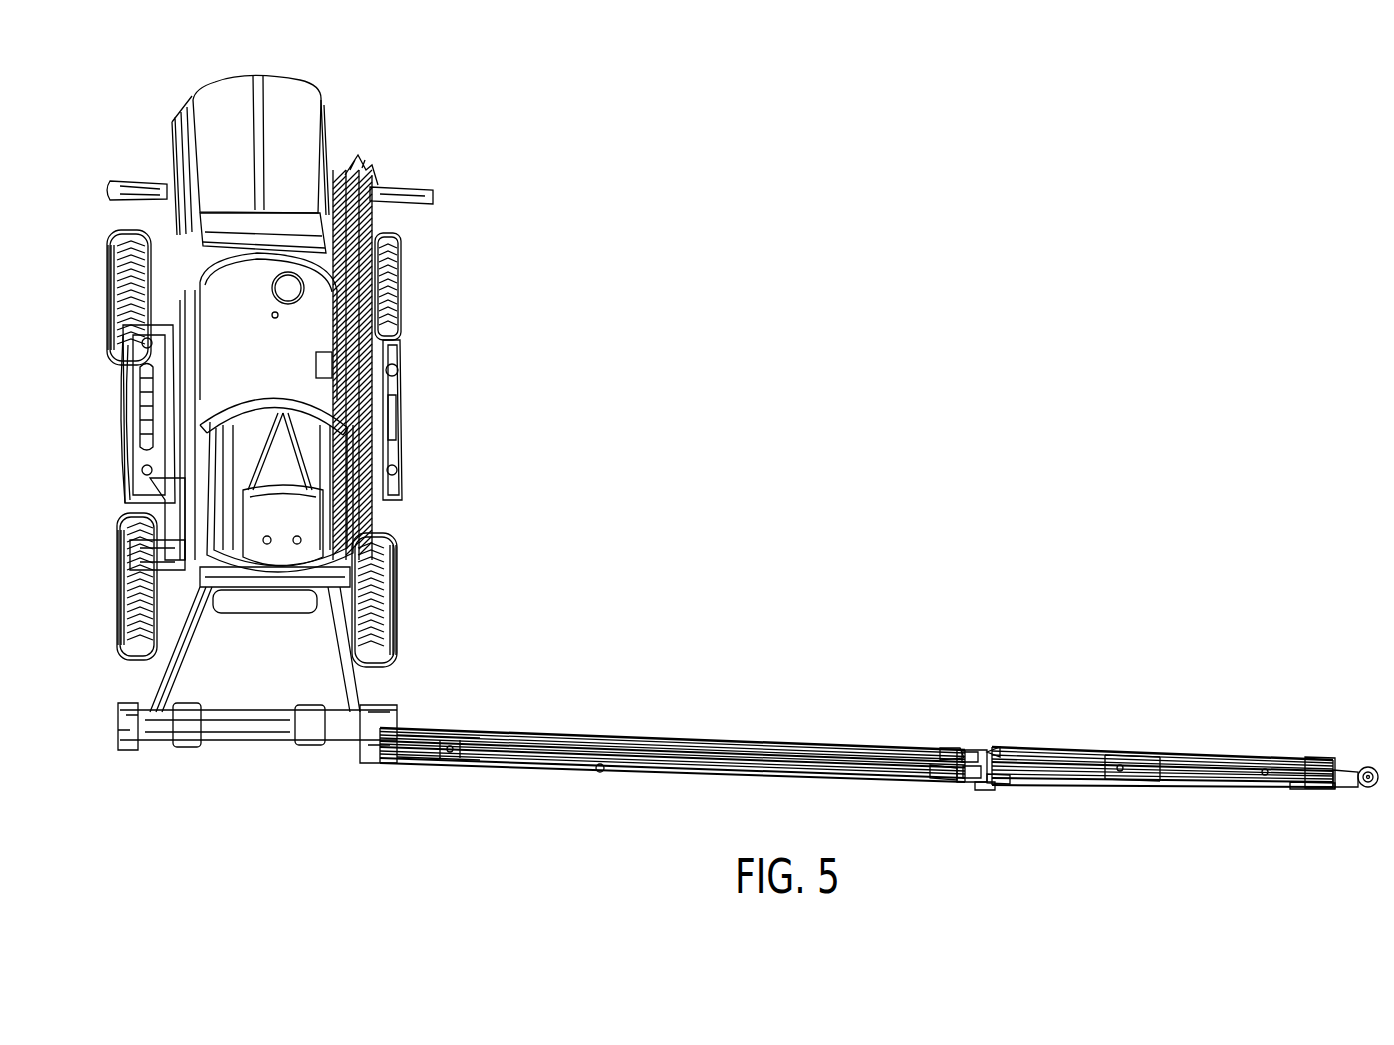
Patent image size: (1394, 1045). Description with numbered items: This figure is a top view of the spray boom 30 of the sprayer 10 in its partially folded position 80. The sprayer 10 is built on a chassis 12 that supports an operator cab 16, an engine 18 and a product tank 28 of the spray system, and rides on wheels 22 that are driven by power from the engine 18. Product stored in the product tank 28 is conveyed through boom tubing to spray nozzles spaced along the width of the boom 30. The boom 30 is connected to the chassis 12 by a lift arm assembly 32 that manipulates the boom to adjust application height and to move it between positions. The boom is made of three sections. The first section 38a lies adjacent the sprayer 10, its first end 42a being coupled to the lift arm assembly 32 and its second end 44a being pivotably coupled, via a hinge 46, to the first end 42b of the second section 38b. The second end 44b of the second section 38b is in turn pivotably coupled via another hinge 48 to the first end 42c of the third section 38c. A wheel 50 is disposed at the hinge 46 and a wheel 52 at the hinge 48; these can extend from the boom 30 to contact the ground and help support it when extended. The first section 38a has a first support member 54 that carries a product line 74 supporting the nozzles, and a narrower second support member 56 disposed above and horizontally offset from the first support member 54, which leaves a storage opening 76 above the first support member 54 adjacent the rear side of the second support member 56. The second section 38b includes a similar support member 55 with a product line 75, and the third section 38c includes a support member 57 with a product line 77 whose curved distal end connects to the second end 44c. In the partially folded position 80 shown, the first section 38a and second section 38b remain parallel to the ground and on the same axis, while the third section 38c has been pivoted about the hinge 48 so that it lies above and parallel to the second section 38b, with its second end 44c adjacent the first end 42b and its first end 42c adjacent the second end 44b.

The sprayer 10 is at (217, 77).
The chassis 12 is at (390, 415).
The operator cab 16 is at (293, 477).
The engine 18 is at (298, 128).
The wheels 22 is at (397, 613).
The product tank 28 is at (300, 330).
The boom 30 is at (601, 773).
The lift arm assembly 32 is at (303, 717).
The first section 38a is at (467, 767).
The second section 38b is at (1188, 785).
The third section 38c is at (1113, 747).
The first end of the first section 42a is at (373, 763).
The first end of the second section 42b is at (967, 753).
The first end of the third section 42c is at (1313, 748).
The second end of the first section 44a is at (960, 750).
The second end of the second section 44b is at (1335, 787).
The second end of the third section 44c is at (987, 780).
The hinge 46 is at (960, 778).
The hinge 48 is at (1342, 773).
The wheel 50 is at (973, 783).
The wheel 52 is at (1373, 790).
The first support member 54 is at (669, 775).
The support member 55 is at (988, 787).
The second support member 56 is at (678, 740).
The support member 57 is at (1085, 750).
The product line 74 is at (552, 733).
The product line 75 is at (983, 753).
The storage opening 76 is at (612, 722).
The product line 77 is at (1267, 750).
The partially folded position 80 is at (872, 557).